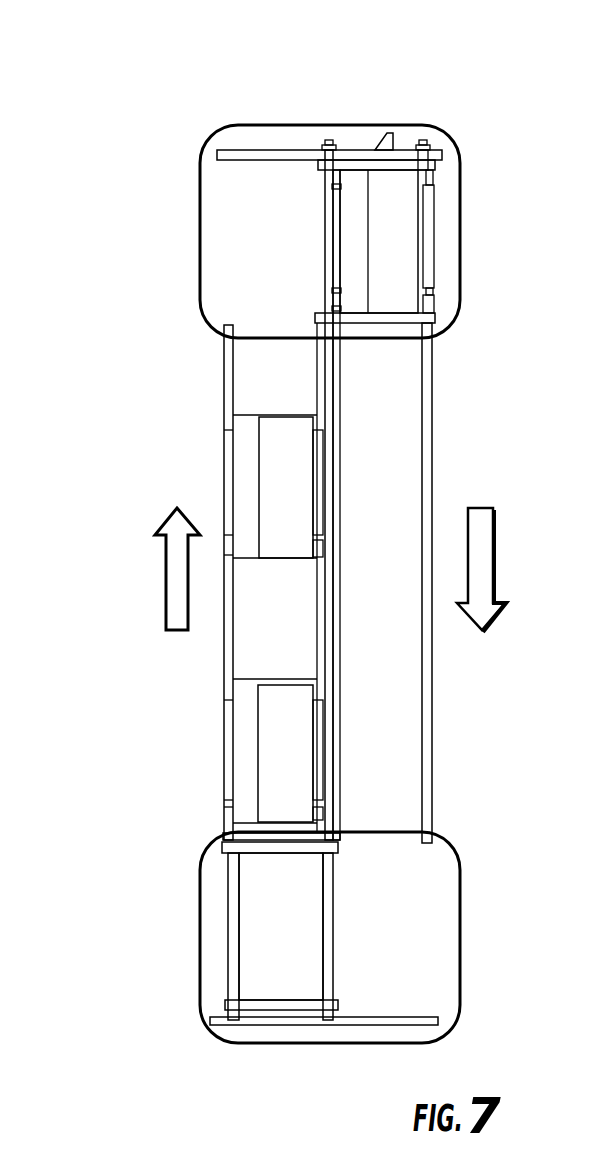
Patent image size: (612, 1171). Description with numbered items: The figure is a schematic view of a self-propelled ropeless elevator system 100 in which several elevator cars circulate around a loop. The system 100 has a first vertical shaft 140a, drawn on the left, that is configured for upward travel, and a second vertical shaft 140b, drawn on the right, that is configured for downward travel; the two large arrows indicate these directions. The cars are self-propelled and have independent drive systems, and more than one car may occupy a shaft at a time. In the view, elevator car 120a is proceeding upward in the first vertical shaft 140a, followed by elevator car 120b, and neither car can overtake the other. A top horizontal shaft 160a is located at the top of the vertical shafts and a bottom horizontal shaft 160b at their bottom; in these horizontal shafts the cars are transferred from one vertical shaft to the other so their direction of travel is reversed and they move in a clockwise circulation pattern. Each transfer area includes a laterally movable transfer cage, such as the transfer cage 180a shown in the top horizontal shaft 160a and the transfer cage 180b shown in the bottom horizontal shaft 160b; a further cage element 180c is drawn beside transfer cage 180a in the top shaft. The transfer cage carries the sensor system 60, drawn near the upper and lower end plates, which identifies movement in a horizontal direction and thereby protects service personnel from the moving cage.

The system 100 is at (76, 81).
The system 60 is at (386, 137).
The elevator car 120a is at (246, 480).
The elevator car 120b is at (245, 757).
The first vertical shaft 140a is at (243, 648).
The second vertical shaft 140b is at (432, 430).
The top horizontal shaft 160a is at (200, 193).
The bottom horizontal shaft 160b is at (445, 883).
The transfer cage 180a is at (323, 240).
The transfer cage 180b is at (228, 917).
The third actuator 180c is at (407, 247).